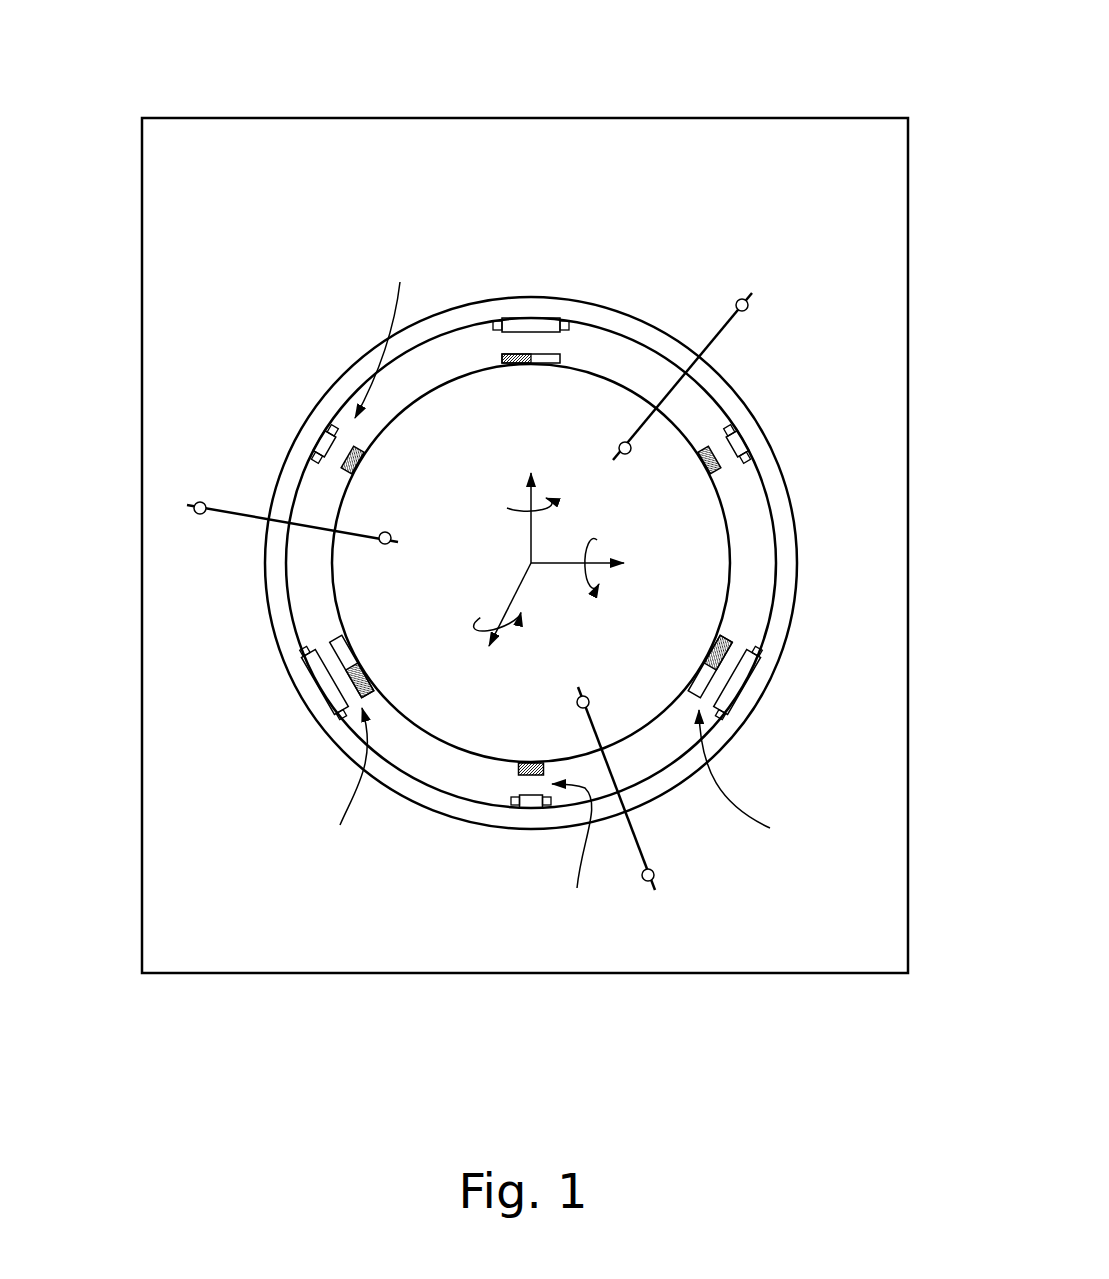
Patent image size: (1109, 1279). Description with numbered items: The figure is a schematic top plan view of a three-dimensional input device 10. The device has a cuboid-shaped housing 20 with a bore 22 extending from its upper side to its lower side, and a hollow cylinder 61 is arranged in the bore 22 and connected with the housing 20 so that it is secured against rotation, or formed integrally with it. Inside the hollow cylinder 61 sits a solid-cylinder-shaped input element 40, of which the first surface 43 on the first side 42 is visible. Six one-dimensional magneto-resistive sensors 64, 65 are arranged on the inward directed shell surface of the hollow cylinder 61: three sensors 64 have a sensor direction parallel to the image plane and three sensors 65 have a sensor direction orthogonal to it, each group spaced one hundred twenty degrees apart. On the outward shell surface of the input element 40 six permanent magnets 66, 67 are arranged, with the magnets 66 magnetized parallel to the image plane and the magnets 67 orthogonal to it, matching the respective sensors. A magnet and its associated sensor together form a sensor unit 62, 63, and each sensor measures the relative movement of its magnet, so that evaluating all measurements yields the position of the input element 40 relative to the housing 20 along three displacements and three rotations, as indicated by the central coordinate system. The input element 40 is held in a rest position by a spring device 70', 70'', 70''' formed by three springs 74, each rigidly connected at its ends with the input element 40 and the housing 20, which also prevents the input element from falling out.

The 3D input device 10 is at (133, 318).
The housing 20 is at (262, 900).
The bore 22 is at (485, 294).
The input element 40 is at (409, 688).
The first side 42 is at (683, 559).
The first surface 43 is at (637, 531).
The hollow cylinder 61 is at (460, 313).
The sensor unit 62 is at (567, 337).
The sensor unit 63 is at (473, 583).
The magneto-resistive sensor 64 is at (513, 327).
The magneto-resistive sensor 65 is at (320, 440).
The permanent magnet 66 is at (563, 362).
The permanent magnet 67 is at (343, 472).
The spring device 70' is at (298, 571).
The spring device 70'' is at (682, 246).
The spring device 70''' is at (622, 882).
The spring 74 is at (748, 303).